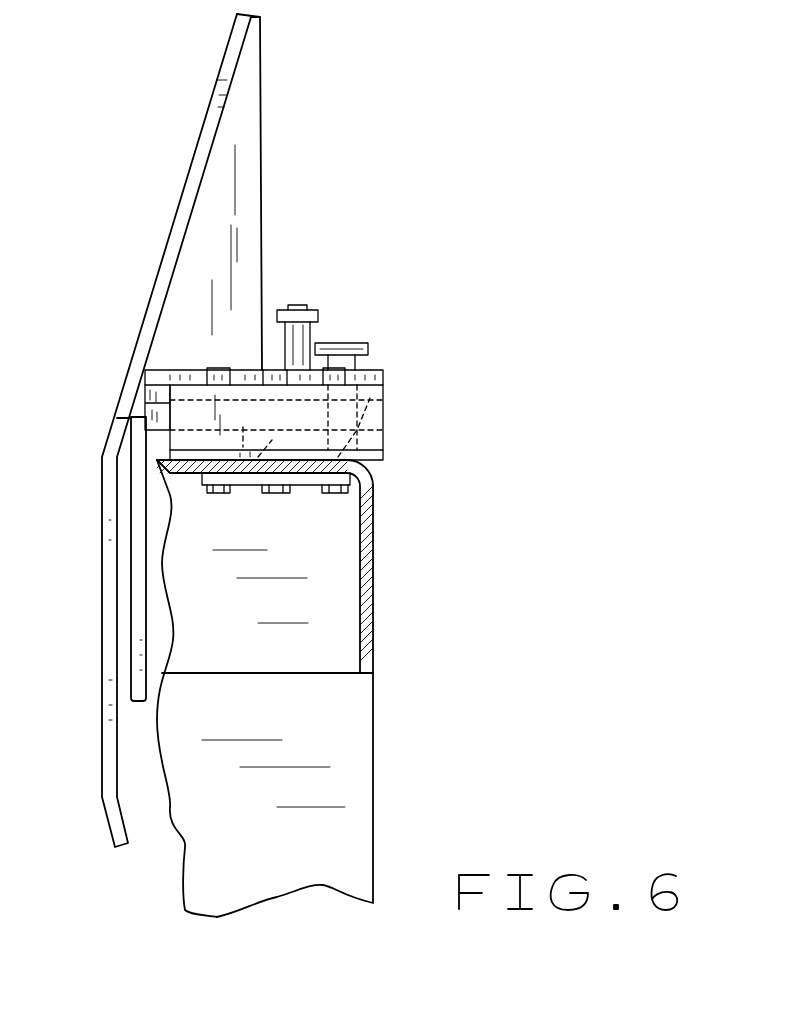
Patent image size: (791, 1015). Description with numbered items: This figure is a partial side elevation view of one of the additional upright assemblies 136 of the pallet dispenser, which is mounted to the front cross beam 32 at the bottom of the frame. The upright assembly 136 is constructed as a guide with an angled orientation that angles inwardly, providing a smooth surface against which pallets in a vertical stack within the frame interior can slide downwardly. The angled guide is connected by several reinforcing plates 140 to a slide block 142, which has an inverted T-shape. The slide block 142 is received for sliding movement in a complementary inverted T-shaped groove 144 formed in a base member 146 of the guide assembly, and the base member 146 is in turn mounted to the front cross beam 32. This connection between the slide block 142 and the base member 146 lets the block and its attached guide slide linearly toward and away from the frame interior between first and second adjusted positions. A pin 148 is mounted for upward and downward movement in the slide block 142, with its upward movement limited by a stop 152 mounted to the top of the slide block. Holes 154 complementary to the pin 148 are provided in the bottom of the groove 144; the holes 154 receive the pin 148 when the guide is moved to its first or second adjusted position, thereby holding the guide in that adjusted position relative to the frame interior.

The additional upright assembly 136 is at (116, 243).
The reinforcing plate 140 is at (243, 180).
The slide block 142 is at (383, 371).
The inverted T-shaped groove 144 is at (383, 400).
The base member 146 is at (383, 451).
The pin 148 is at (348, 343).
The stop 152 is at (310, 310).
The hole 154 is at (338, 493).
The front cross beam 32 is at (372, 486).